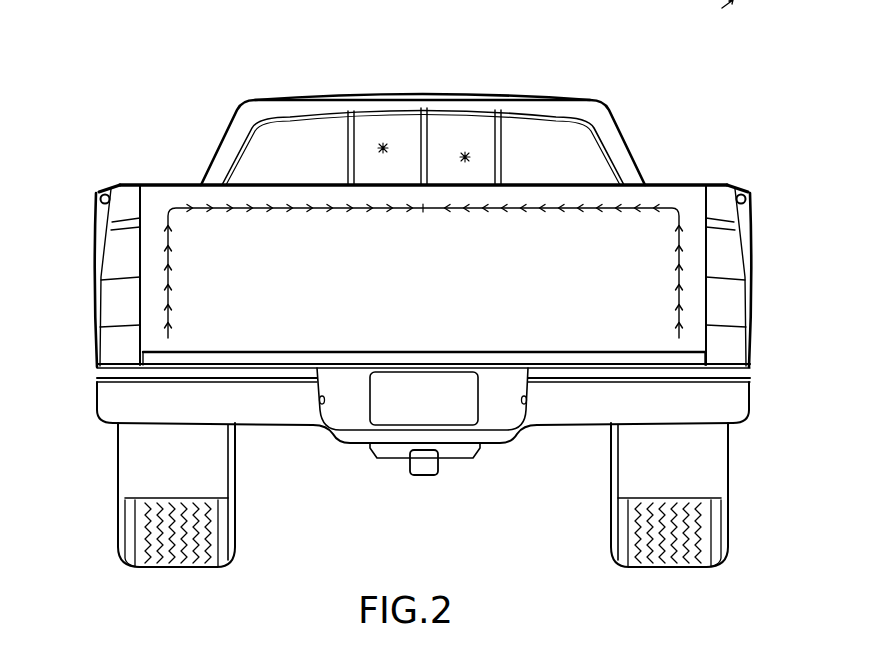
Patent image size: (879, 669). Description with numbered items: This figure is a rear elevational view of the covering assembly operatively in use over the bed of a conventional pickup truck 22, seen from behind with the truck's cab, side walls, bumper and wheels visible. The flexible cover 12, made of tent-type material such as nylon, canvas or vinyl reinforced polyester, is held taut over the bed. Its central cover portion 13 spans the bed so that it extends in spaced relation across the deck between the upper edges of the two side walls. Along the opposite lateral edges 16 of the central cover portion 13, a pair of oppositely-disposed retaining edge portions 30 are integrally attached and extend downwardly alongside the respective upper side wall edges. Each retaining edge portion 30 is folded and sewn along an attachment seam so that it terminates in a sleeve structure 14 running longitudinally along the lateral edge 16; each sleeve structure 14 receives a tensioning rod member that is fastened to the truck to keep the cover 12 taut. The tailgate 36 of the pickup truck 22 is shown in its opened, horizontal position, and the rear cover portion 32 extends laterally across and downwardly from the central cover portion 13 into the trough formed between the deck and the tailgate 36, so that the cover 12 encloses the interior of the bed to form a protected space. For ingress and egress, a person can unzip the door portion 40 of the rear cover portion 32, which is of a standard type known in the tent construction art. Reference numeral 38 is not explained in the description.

The cover 12 is at (470, 183).
The central cover portion 13 is at (338, 183).
The sleeve structure 14 is at (95, 210).
The lateral edge 16 is at (120, 183).
The pickup truck 22 is at (431, 90).
The retaining edge portion 30 is at (100, 193).
The rear cover portion 32 is at (445, 286).
The tailgate 36 is at (305, 358).
The left bumper end 38 is at (178, 342).
The door portion 40 is at (628, 302).